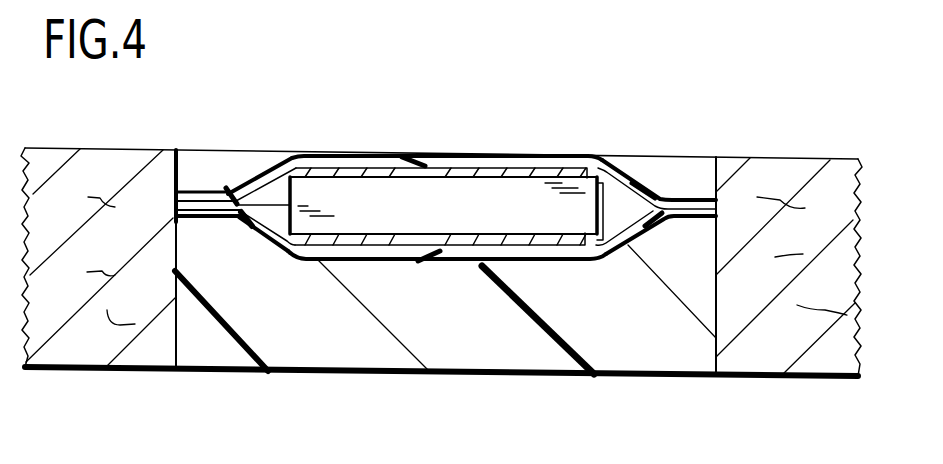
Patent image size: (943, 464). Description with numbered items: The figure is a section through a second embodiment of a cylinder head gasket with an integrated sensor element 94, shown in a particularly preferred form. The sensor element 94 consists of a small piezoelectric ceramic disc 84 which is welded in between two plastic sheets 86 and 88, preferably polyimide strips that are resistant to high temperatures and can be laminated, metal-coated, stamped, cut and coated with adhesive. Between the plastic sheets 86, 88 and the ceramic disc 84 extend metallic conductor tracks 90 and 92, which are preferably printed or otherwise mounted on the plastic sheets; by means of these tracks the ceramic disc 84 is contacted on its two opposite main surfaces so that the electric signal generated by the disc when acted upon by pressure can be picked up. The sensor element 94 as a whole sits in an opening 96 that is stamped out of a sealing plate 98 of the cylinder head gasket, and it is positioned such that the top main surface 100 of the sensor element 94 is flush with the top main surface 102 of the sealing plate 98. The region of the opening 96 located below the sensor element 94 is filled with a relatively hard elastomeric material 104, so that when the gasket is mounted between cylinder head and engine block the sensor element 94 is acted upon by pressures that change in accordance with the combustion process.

The piezoelectric ceramic disc 84 is at (438, 203).
The plastic sheet 86 is at (270, 176).
The plastic sheet 88 is at (261, 242).
The metallic conductor track 90 is at (369, 167).
The metallic conductor track 92 is at (400, 248).
The sensor element 94 is at (572, 154).
The opening 96 is at (713, 345).
The sealing plate 98 is at (803, 379).
The top main surface of the sensor element 100 is at (518, 153).
The top main surface of the sealing plate 102 is at (777, 156).
The elastomeric material 104 is at (562, 358).